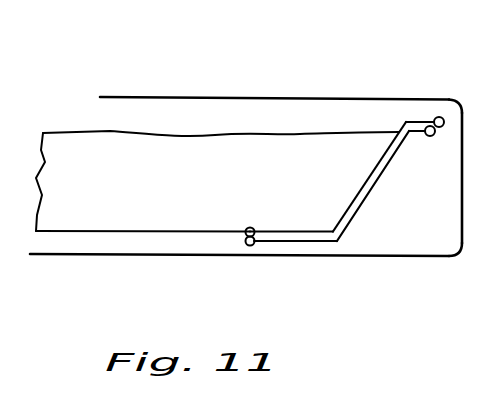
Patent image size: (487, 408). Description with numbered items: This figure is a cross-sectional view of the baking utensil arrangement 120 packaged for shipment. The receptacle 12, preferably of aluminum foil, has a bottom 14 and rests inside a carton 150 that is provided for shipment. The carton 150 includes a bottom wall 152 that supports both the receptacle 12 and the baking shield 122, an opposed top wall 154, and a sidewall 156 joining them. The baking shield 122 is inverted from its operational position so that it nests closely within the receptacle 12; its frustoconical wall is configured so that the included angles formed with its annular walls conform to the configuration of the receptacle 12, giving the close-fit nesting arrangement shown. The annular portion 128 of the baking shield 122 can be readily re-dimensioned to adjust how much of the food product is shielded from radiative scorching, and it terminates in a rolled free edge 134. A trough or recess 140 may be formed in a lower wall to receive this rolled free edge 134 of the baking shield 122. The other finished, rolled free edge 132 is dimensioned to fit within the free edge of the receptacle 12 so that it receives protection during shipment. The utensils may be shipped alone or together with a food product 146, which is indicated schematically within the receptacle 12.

The receptacle 12 is at (406, 119).
The bottom 14 is at (148, 229).
The baking utensil arrangement 120 is at (436, 116).
The baking shield 122 is at (361, 198).
The annular portion 128 is at (288, 239).
The free edge 132 is at (427, 136).
The rolled free edge 134 is at (246, 244).
The trough or recess 140 is at (248, 227).
The food product 146 is at (70, 140).
The carton 150 is at (461, 98).
The bottom wall 152 is at (335, 258).
The top wall 154 is at (170, 96).
The sidewall 156 is at (463, 207).